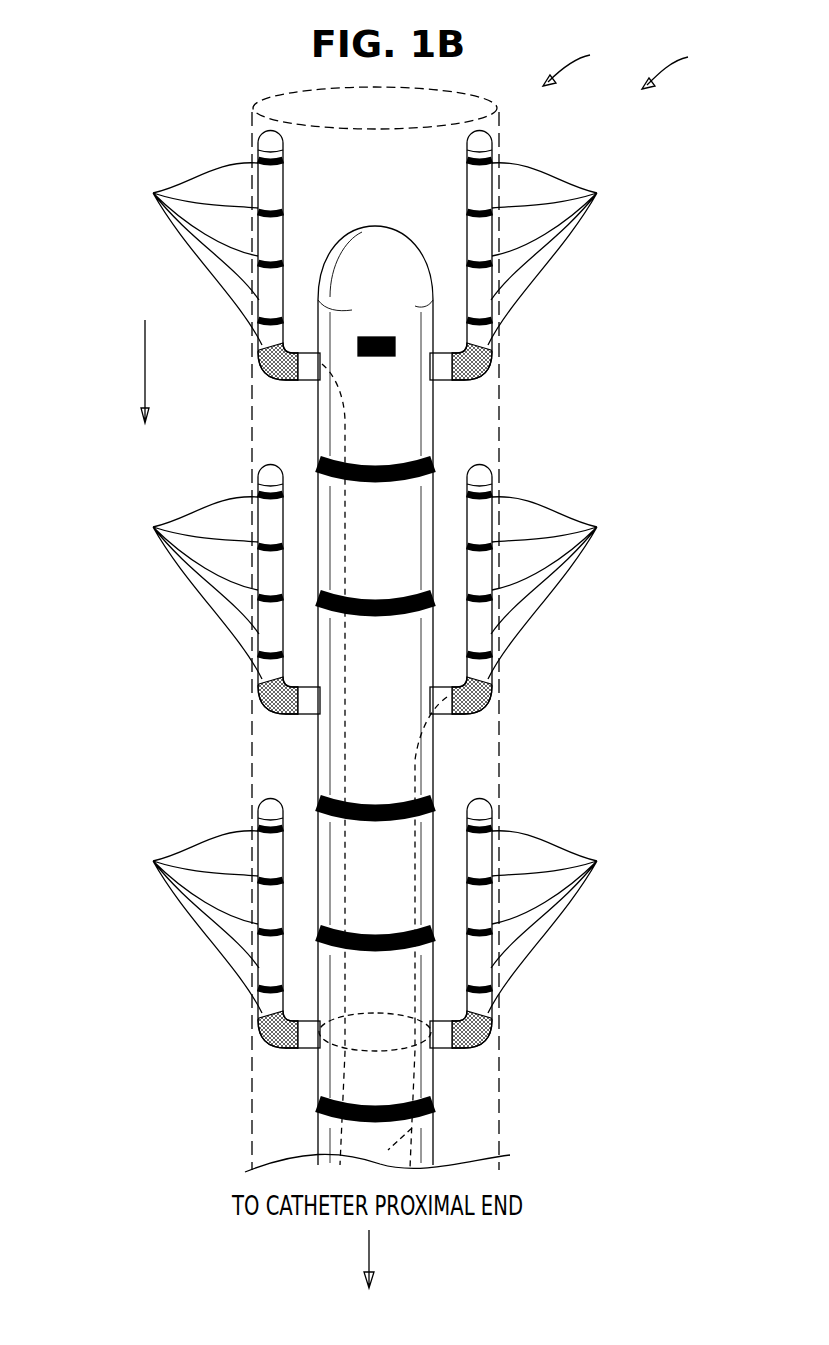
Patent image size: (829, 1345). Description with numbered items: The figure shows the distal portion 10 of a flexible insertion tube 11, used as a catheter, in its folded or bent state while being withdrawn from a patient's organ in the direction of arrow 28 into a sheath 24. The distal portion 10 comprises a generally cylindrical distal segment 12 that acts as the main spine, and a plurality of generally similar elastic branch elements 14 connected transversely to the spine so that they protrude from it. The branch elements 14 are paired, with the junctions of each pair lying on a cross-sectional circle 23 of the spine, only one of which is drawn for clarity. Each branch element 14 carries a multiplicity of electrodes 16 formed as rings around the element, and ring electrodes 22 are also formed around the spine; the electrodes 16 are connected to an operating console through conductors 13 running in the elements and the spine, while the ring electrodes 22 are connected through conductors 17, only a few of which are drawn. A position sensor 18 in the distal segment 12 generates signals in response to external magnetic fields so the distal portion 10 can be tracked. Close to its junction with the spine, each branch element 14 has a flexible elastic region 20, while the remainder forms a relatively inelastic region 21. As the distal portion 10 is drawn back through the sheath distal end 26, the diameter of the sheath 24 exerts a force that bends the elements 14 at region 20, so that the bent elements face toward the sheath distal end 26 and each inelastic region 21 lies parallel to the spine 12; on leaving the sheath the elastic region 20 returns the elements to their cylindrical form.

The distal portion 10 is at (583, 64).
The flexible insertion tube 11 is at (680, 65).
The distal segment 12 is at (395, 226).
The conductors 13 is at (338, 400).
The elastic branch elements 14 is at (285, 178).
The electrodes 16 is at (375, 588).
The conductors 17 is at (385, 1150).
The position-sensors 18 is at (380, 358).
The region 20 is at (272, 380).
The inelastic region 21 is at (258, 300).
The ring electrodes 22 is at (370, 590).
The cross-sectional circle 23 is at (342, 1048).
The sheath 24 is at (252, 1097).
The sheath distal end 26 is at (292, 105).
The arrow 28 is at (145, 377).